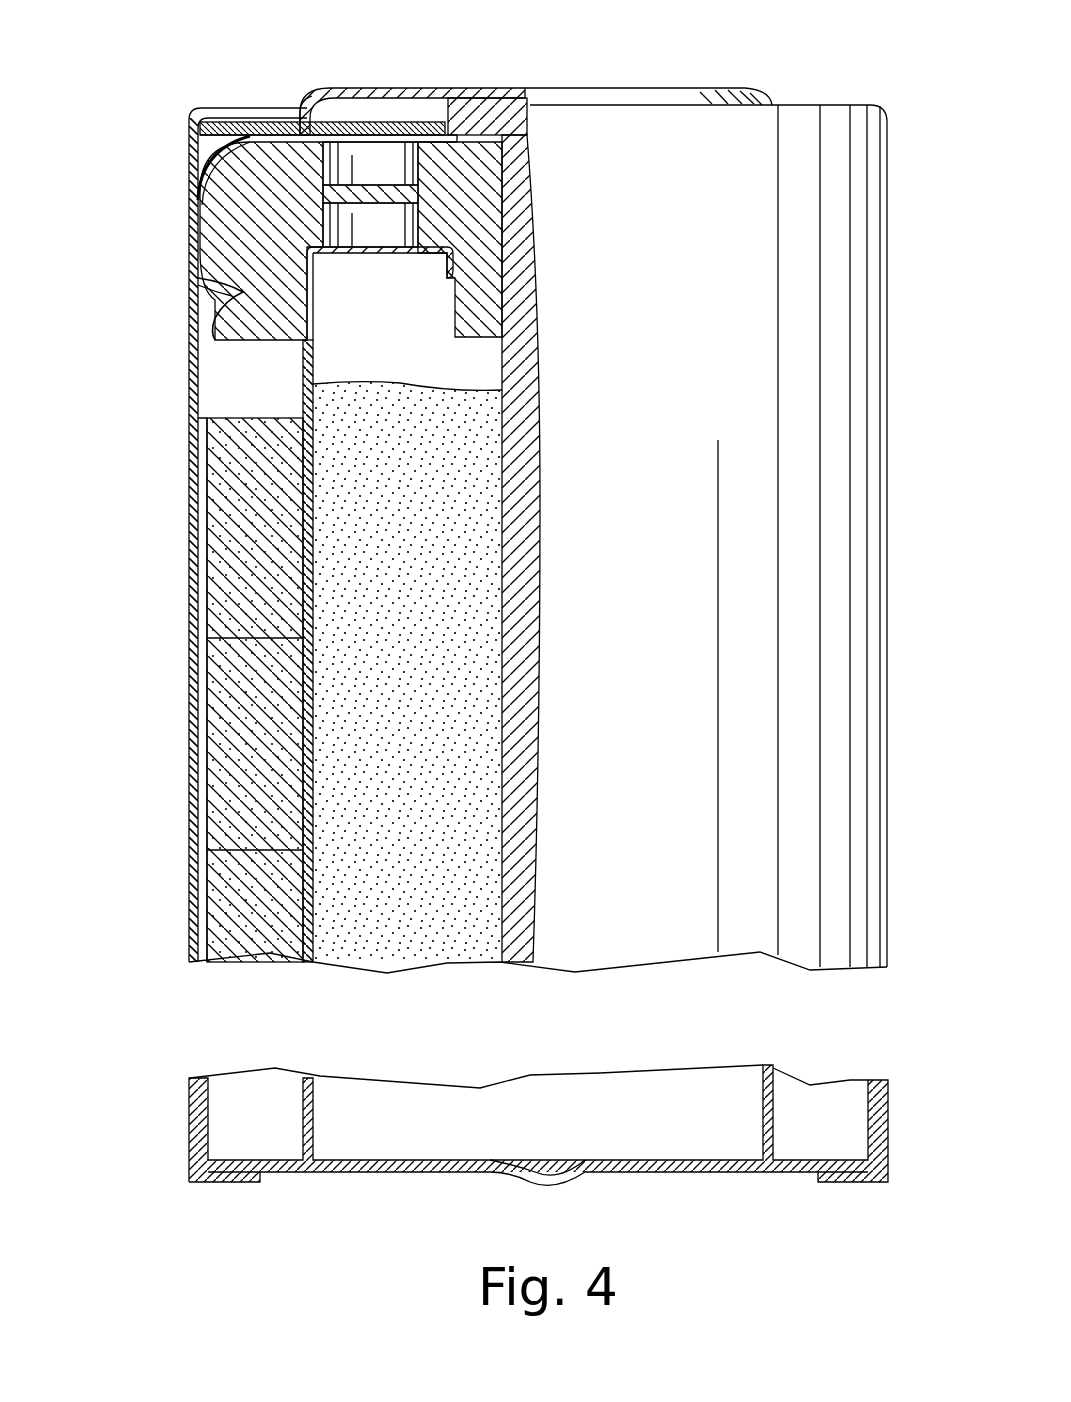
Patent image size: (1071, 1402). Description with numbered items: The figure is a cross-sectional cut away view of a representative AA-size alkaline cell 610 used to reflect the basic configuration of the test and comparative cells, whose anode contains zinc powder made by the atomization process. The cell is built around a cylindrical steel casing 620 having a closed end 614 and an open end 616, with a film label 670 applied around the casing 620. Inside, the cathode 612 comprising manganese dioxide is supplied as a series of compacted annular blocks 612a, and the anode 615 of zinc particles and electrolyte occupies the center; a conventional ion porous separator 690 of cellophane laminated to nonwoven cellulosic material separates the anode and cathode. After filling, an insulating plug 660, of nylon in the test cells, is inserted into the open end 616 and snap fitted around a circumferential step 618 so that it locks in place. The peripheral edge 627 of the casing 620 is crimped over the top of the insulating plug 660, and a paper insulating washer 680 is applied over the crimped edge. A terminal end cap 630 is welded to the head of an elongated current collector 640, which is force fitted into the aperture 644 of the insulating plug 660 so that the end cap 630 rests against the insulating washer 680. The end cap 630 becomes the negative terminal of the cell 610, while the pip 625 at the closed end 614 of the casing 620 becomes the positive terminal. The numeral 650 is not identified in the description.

The alkaline cell 610 is at (158, 293).
The cathode 612 is at (215, 572).
The compacted annular blocks 612a is at (210, 627).
The closed end 614 is at (390, 1175).
The anode 615 is at (445, 957).
The open end 616 is at (300, 112).
The circumferential step 618 is at (200, 305).
The cylindrical steel casing 620 is at (205, 515).
The pip 625 is at (557, 1187).
The peripheral edge 627 is at (258, 123).
The terminal end cap 630 is at (372, 88).
The current collector 640 is at (490, 120).
The aperture 644 is at (527, 140).
The outer can 650 is at (205, 452).
The insulating plug 660 is at (285, 150).
The film label 670 is at (189, 190).
The paper insulating washer 680 is at (197, 155).
The ion porous separator 690 is at (317, 965).